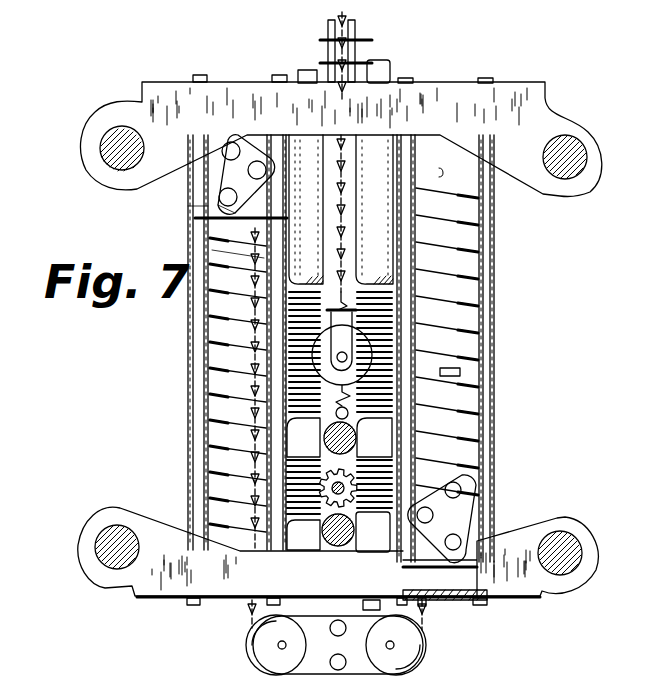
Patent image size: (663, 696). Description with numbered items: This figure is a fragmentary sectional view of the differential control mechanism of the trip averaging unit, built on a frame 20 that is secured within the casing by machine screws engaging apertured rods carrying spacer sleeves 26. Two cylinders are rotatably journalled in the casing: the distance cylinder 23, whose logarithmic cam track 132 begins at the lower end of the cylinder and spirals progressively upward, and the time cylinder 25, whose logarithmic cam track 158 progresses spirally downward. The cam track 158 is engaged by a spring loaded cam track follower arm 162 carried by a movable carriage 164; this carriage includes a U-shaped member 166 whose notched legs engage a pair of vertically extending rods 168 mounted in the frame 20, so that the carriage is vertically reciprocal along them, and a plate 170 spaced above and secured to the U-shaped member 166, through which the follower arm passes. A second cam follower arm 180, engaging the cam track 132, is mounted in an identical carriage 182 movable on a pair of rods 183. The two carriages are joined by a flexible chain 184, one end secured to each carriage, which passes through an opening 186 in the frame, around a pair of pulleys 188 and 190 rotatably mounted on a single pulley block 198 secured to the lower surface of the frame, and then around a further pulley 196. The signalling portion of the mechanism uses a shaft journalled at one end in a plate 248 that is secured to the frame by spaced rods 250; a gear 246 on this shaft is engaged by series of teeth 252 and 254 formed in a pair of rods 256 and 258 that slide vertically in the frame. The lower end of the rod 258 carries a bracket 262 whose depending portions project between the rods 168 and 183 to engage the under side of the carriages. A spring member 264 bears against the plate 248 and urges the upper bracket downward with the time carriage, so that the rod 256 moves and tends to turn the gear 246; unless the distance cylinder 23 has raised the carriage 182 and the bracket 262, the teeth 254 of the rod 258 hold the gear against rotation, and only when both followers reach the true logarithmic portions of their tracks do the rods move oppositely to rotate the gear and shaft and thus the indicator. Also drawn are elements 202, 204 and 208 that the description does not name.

The frame 20 is at (160, 107).
The distance cylinder 23 is at (442, 163).
The time cylinder 25 is at (227, 478).
The spacer sleeves 26 is at (568, 548).
The logarithmic cam track 132 is at (460, 374).
The logarithmic cam track 158 is at (230, 383).
The cam track follower arm 162 is at (258, 165).
The carriage 164 is at (183, 211).
The U-shaped member 166 is at (250, 220).
The rods 168 is at (200, 75).
The plate 170 is at (215, 179).
The cam follower arm 180 is at (434, 515).
The carriage 182 is at (506, 500).
The rods 183 is at (408, 78).
The flexible chain 184 is at (242, 618).
The opening 186 is at (426, 614).
The pulley 188 is at (406, 666).
The pulley 190 is at (255, 650).
The pulley 196 is at (372, 351).
The pulley block 198 is at (300, 653).
The chain 202 is at (340, 14).
The cylinder 204 is at (398, 316).
The post 208 is at (356, 26).
The gear 246 is at (320, 494).
The plate 248 is at (350, 405).
The rods 250 is at (358, 440).
The teeth 252 is at (290, 465).
The teeth 254 is at (300, 473).
The rod 256 is at (308, 70).
The rod 258 is at (373, 60).
The bracket 262 is at (447, 570).
The spring member 264 is at (352, 322).